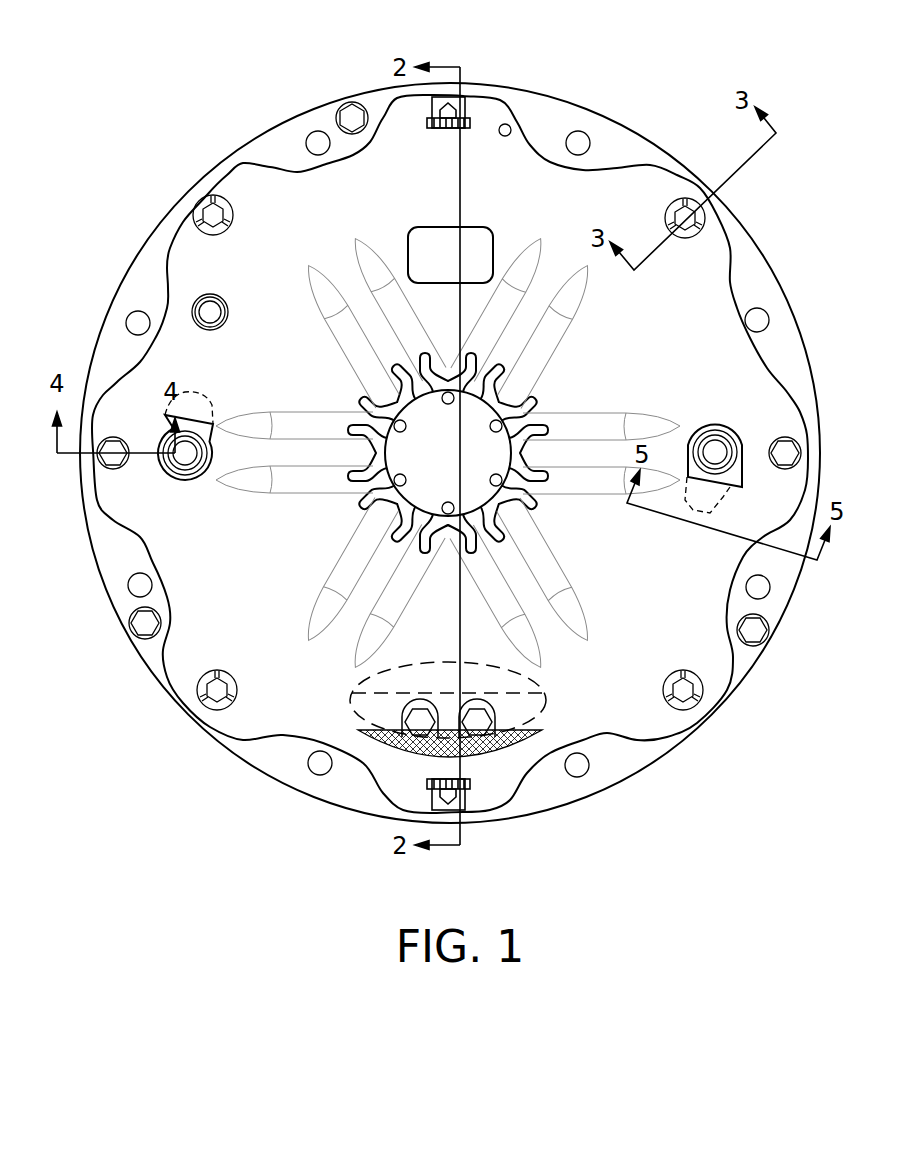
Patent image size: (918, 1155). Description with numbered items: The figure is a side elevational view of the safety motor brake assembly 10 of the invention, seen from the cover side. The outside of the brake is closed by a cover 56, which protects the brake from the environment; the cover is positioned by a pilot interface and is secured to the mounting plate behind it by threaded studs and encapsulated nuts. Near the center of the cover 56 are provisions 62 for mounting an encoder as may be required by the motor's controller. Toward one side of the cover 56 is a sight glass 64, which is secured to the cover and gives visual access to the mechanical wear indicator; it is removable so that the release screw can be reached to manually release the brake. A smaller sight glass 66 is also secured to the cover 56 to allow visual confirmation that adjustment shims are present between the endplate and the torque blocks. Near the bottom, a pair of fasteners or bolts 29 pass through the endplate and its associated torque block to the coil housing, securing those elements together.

The motor brake assembly 10 is at (717, 77).
The fasteners or bolts 29 is at (405, 713).
The cover 56 is at (660, 610).
The provisions to mount an encoder 62 is at (543, 400).
The sight glass 64 is at (200, 467).
The smaller sight glass 66 is at (207, 307).